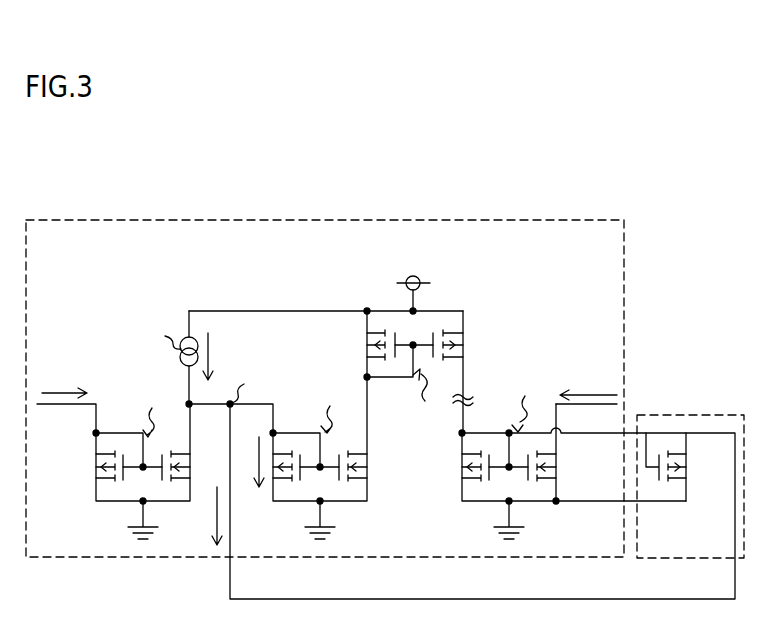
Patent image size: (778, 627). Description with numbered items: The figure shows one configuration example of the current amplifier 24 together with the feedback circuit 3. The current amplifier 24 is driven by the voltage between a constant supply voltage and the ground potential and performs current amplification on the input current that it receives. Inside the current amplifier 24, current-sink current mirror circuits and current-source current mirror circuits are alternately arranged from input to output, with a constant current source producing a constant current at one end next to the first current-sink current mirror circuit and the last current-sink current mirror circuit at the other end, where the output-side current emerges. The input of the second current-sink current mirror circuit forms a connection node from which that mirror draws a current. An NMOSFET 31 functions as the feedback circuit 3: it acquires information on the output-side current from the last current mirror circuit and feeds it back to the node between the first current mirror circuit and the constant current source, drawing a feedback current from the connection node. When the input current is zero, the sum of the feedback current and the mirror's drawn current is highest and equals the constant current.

The current amplifier 24 is at (415, 220).
The feedback circuit 3 is at (683, 415).
The NMOSFET 31 is at (688, 467).